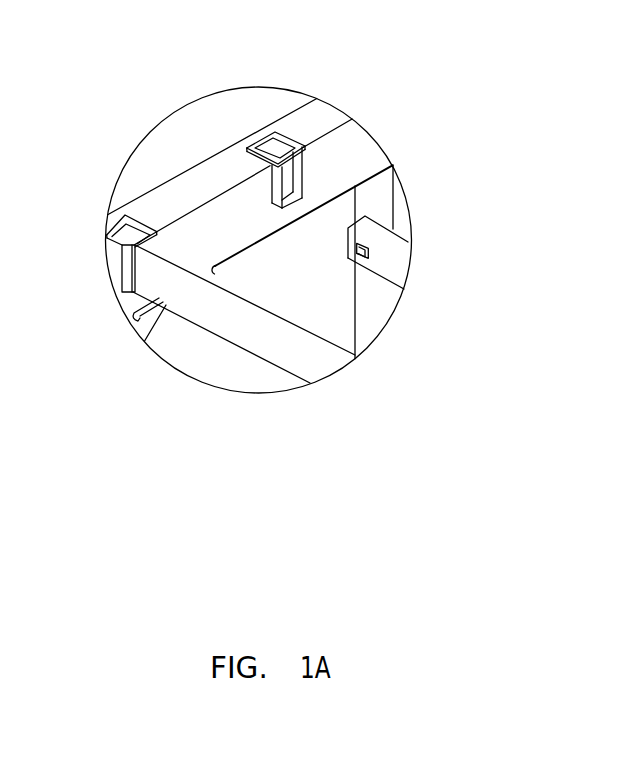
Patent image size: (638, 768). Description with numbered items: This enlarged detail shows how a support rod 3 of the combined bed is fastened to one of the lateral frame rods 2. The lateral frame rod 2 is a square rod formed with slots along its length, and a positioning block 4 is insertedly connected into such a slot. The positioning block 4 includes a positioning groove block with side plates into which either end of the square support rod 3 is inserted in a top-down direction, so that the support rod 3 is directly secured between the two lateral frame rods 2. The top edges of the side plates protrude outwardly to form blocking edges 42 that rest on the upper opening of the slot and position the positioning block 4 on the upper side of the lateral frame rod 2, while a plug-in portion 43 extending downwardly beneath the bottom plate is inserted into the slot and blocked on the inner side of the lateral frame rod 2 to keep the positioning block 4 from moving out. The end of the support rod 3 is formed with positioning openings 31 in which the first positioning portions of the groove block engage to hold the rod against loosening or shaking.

The lateral frame rod 2 is at (211, 175).
The support rod 3 is at (388, 268).
The positioning opening 31 is at (363, 247).
The positioning block 4 is at (128, 273).
The blocking edge 42 is at (145, 217).
The plug-in portion 43 is at (290, 173).